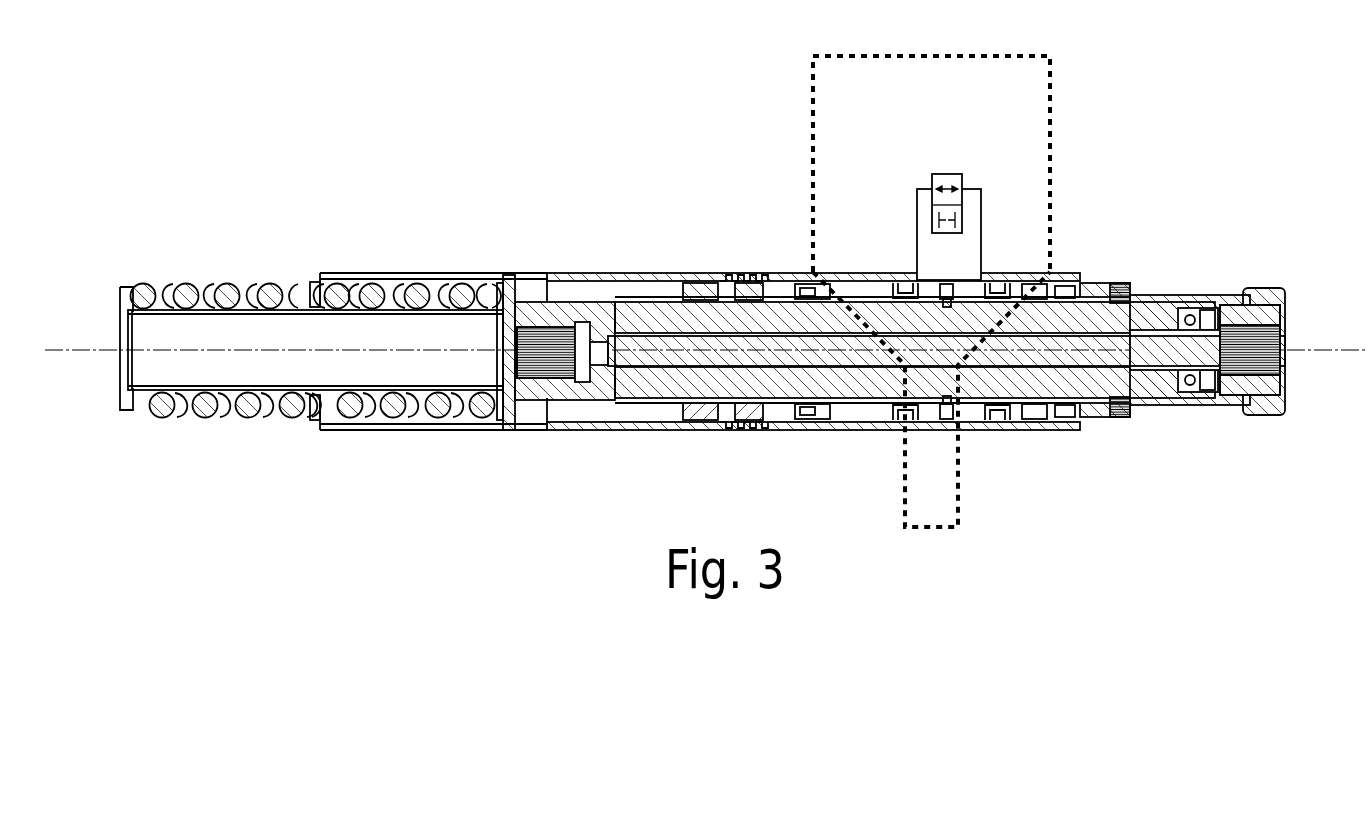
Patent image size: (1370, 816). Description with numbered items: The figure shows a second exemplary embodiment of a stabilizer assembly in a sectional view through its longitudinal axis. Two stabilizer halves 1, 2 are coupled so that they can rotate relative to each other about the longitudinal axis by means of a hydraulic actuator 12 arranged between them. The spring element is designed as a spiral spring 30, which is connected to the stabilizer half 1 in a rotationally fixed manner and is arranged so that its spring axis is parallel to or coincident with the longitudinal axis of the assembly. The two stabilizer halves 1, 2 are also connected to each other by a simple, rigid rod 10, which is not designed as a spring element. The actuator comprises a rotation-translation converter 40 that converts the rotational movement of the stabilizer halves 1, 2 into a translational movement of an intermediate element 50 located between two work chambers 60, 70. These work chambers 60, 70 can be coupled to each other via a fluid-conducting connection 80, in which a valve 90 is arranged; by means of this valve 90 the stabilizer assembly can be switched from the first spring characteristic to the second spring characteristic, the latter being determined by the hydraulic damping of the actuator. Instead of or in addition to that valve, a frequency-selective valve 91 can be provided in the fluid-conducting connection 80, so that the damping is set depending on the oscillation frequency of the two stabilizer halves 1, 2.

The stabilizer half 1 is at (530, 327).
The stabilizer half 2 is at (1258, 335).
The rigid rod 10 is at (875, 355).
The hydraulic actuator 12 is at (1052, 68).
The spiral spring 30 is at (440, 410).
The rotation-translation converter 40 is at (695, 280).
The intermediate element 50 is at (948, 280).
The work chamber 60 is at (988, 280).
The work chamber 70 is at (905, 280).
The fluid-conducting connection 80 is at (917, 200).
The valve 90 is at (947, 174).
The frequency-selective valve 91 is at (985, 155).